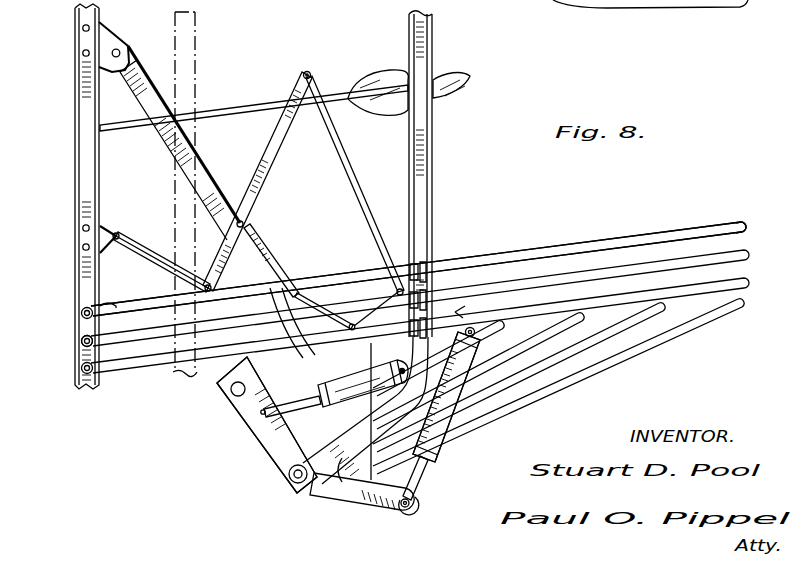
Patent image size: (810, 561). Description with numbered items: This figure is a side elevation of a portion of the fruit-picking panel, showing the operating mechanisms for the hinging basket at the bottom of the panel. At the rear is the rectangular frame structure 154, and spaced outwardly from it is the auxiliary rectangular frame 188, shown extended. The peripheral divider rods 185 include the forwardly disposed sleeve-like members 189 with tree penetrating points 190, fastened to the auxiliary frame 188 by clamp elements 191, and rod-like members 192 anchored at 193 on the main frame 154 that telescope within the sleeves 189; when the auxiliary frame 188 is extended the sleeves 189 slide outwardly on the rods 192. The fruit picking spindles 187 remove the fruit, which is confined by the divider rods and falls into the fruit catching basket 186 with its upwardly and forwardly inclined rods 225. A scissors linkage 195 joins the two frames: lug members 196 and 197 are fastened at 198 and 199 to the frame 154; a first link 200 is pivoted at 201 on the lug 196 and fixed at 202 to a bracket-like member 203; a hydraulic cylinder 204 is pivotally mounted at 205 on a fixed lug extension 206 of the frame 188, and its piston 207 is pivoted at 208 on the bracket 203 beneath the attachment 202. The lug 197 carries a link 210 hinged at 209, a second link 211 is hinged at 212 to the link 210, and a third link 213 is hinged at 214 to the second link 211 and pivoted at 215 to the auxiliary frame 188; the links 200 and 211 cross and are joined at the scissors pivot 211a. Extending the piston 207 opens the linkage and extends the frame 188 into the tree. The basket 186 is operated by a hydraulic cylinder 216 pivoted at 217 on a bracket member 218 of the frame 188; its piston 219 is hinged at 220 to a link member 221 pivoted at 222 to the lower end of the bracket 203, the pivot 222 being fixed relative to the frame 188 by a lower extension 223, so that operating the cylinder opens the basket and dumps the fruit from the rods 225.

The rectangular frame structure 154 is at (71, 191).
The divider rods 185 is at (418, 248).
The fruit catching basket 186 is at (467, 453).
The fruit picking spindles 187 is at (387, 62).
The auxiliary rectangular frame 188 is at (193, 41).
The sleeve-like members 189 is at (533, 255).
The tree penetrating points 190 is at (742, 226).
The clamp elements 191 is at (428, 268).
The rod-like members 192 is at (79, 312).
The anchorage 193 is at (80, 347).
The scissors linkage 195 is at (225, 156).
The lug member 196 is at (107, 38).
The lug member 197 is at (111, 219).
The fastening 198 is at (82, 53).
The fastening 199 is at (82, 248).
The first link 200 is at (133, 90).
The pivot 201 is at (121, 51).
The attachment 202 is at (230, 391).
The bracket-like member 203 is at (245, 410).
The hydraulic cylinder 204 is at (337, 381).
The pivot mounting 205 is at (385, 366).
The fixed lug extension 206 is at (356, 326).
The piston 207 is at (262, 416).
The pivot mounting 208 is at (258, 420).
The hinge 209 is at (119, 234).
The link 210 is at (158, 265).
The second link 211 is at (268, 182).
The scissors pivot 211a is at (244, 224).
The hinge 212 is at (226, 286).
The third link 213 is at (359, 173).
The hinge 214 is at (303, 71).
The pivot 215 is at (397, 290).
The hydraulic cylinder 216 is at (462, 432).
The pivot 217 is at (475, 330).
The bracket member 218 is at (455, 312).
The piston 219 is at (420, 493).
The hinge 220 is at (402, 507).
The link member 221 is at (323, 480).
The pivot 222 is at (291, 480).
The lower extension 223 is at (346, 492).
The inclined rods 225 is at (627, 360).